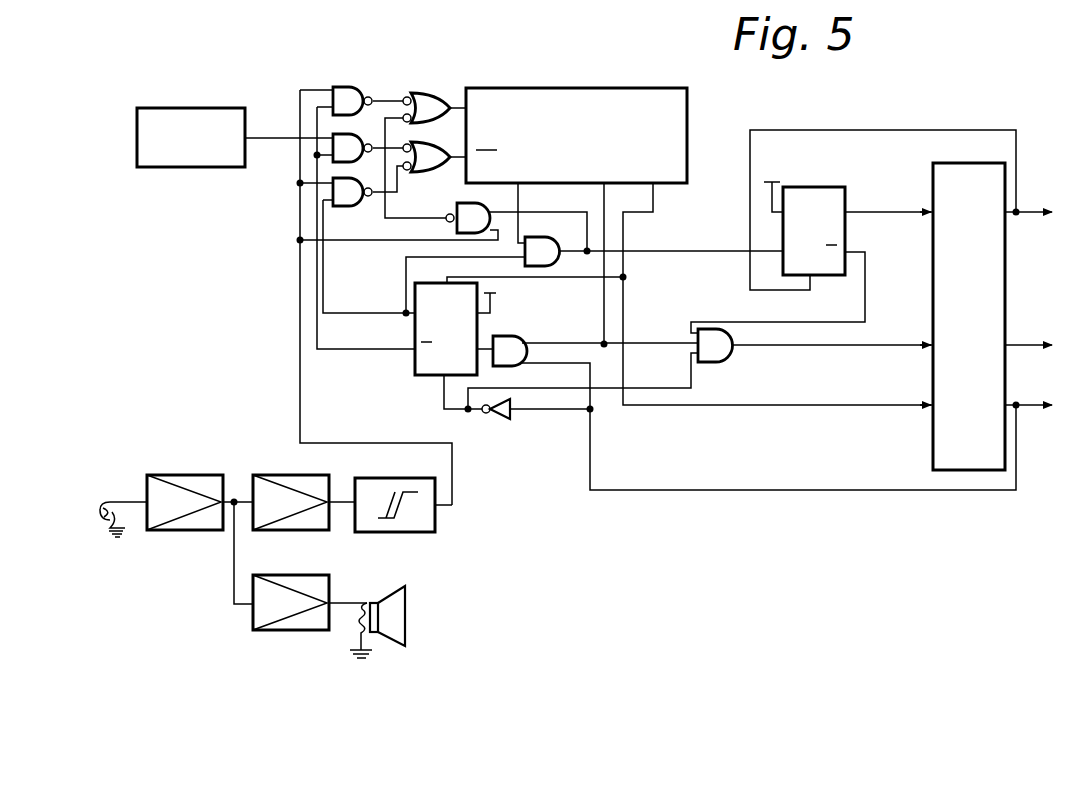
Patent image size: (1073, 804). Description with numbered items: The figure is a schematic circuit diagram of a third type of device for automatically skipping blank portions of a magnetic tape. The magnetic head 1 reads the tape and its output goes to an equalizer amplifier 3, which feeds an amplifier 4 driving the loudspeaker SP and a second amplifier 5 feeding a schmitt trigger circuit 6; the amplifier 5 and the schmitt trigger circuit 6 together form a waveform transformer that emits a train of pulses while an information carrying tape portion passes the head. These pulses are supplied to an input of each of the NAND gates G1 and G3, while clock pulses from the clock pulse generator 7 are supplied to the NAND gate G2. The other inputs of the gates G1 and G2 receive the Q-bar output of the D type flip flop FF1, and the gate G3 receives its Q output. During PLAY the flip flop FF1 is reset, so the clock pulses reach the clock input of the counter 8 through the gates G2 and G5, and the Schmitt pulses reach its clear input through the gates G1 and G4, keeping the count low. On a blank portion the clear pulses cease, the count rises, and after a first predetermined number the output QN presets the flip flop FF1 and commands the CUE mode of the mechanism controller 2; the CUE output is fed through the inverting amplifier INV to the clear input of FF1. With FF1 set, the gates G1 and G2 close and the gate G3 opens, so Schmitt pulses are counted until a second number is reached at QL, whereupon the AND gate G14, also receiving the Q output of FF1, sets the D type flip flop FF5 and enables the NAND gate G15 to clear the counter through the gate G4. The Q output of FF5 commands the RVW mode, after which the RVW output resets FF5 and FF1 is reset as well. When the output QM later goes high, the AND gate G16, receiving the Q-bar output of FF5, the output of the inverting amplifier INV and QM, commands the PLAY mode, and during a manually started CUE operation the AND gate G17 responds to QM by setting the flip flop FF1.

The magnetic head 1 is at (113, 542).
The mechanism controller 2 is at (945, 163).
The equalizer amplifier 3 is at (185, 532).
The amplifier 4 is at (295, 632).
The amplifier 5 is at (295, 532).
The schmitt trigger circuit 6 is at (397, 534).
The clock pulse generator 7 is at (195, 168).
The counter 8 is at (601, 87).
The NAND gate G1 is at (341, 87).
The NAND gate G2 is at (362, 134).
The NAND gate G3 is at (347, 207).
The NAND gate G4 is at (428, 92).
The NAND gate G5 is at (428, 143).
The AND gate G14 is at (545, 226).
The NAND gate G15 is at (484, 203).
The AND gate G16 is at (718, 362).
The AND gate G17 is at (512, 336).
The D type flip flop FF1 is at (420, 377).
The D type flip flop FF5 is at (816, 186).
The inverting amplifier INV is at (503, 419).
The loudspeaker SP is at (406, 617).